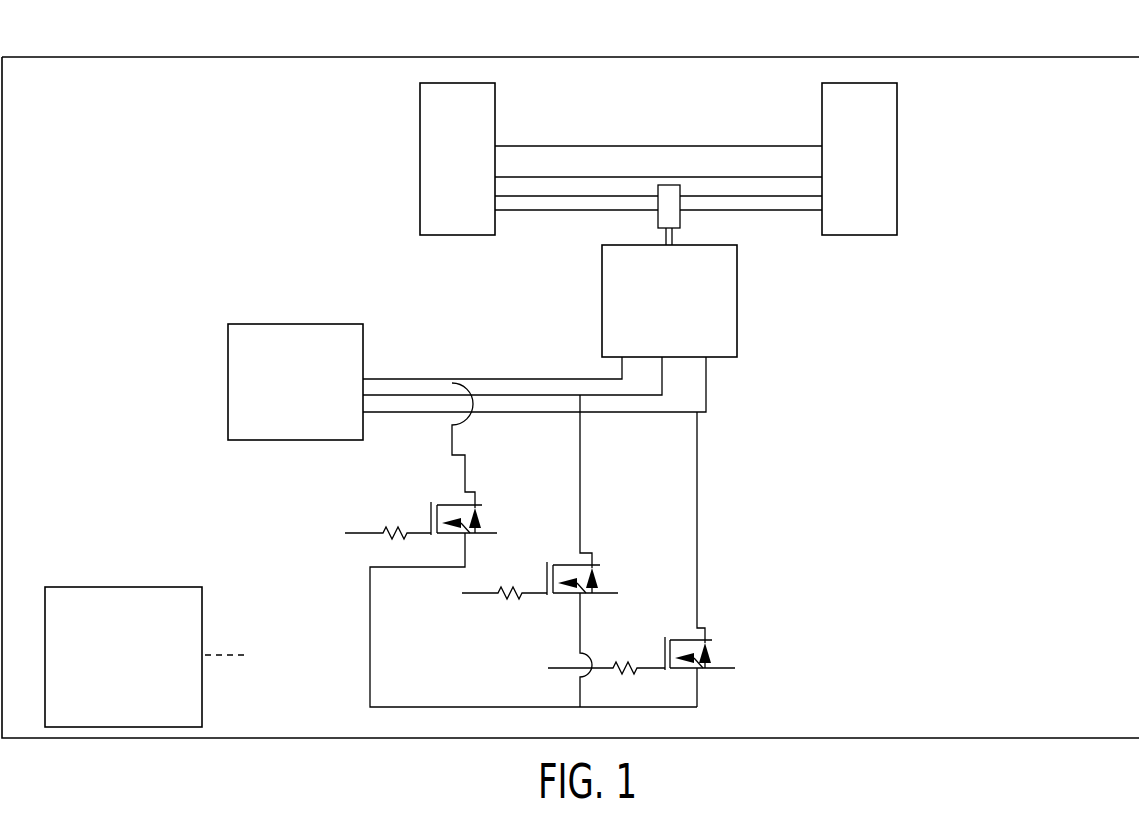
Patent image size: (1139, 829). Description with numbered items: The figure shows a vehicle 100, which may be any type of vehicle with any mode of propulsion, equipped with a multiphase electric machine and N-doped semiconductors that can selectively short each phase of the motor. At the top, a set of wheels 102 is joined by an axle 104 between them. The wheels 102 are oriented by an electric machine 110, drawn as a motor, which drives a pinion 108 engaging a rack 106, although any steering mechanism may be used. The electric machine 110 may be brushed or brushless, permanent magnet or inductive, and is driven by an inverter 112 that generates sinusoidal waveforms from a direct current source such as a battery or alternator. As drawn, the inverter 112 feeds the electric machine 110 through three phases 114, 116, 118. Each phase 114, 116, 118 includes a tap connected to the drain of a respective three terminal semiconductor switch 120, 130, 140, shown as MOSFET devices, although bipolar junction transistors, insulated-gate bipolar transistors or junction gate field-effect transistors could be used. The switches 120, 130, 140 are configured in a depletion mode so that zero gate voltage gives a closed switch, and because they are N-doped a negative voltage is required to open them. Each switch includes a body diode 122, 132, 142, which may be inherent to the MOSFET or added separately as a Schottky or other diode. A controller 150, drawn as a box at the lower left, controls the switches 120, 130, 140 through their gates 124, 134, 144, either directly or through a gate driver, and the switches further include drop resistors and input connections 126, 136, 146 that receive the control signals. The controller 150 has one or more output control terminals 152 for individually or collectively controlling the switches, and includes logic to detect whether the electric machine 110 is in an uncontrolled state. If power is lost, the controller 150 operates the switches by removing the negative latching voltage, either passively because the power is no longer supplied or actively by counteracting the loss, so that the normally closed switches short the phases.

The vehicle 100 is at (786, 56).
The wheel 102 is at (420, 166).
The axle 104 is at (642, 144).
The rack 106 is at (769, 212).
The pinion 108 is at (658, 212).
The electric machine 110 is at (738, 318).
The inverter 112 is at (290, 323).
The first phase 114 is at (523, 378).
The second phase 116 is at (412, 394).
The third phase 118 is at (707, 395).
The three terminal semiconductor switch 120 is at (514, 545).
The body diode 122 is at (497, 533).
The gate 124 is at (423, 530).
The input connection 126 is at (364, 530).
The three terminal semiconductor switch 130 is at (561, 551).
The body diode 132 is at (618, 593).
The gate 134 is at (540, 592).
The input connection 136 is at (477, 597).
The three terminal semiconductor switch 140 is at (661, 559).
The body diode 142 is at (735, 668).
The gate 144 is at (655, 666).
The input connection 146 is at (553, 664).
The controller 150 is at (123, 586).
The output control terminal 152 is at (221, 653).